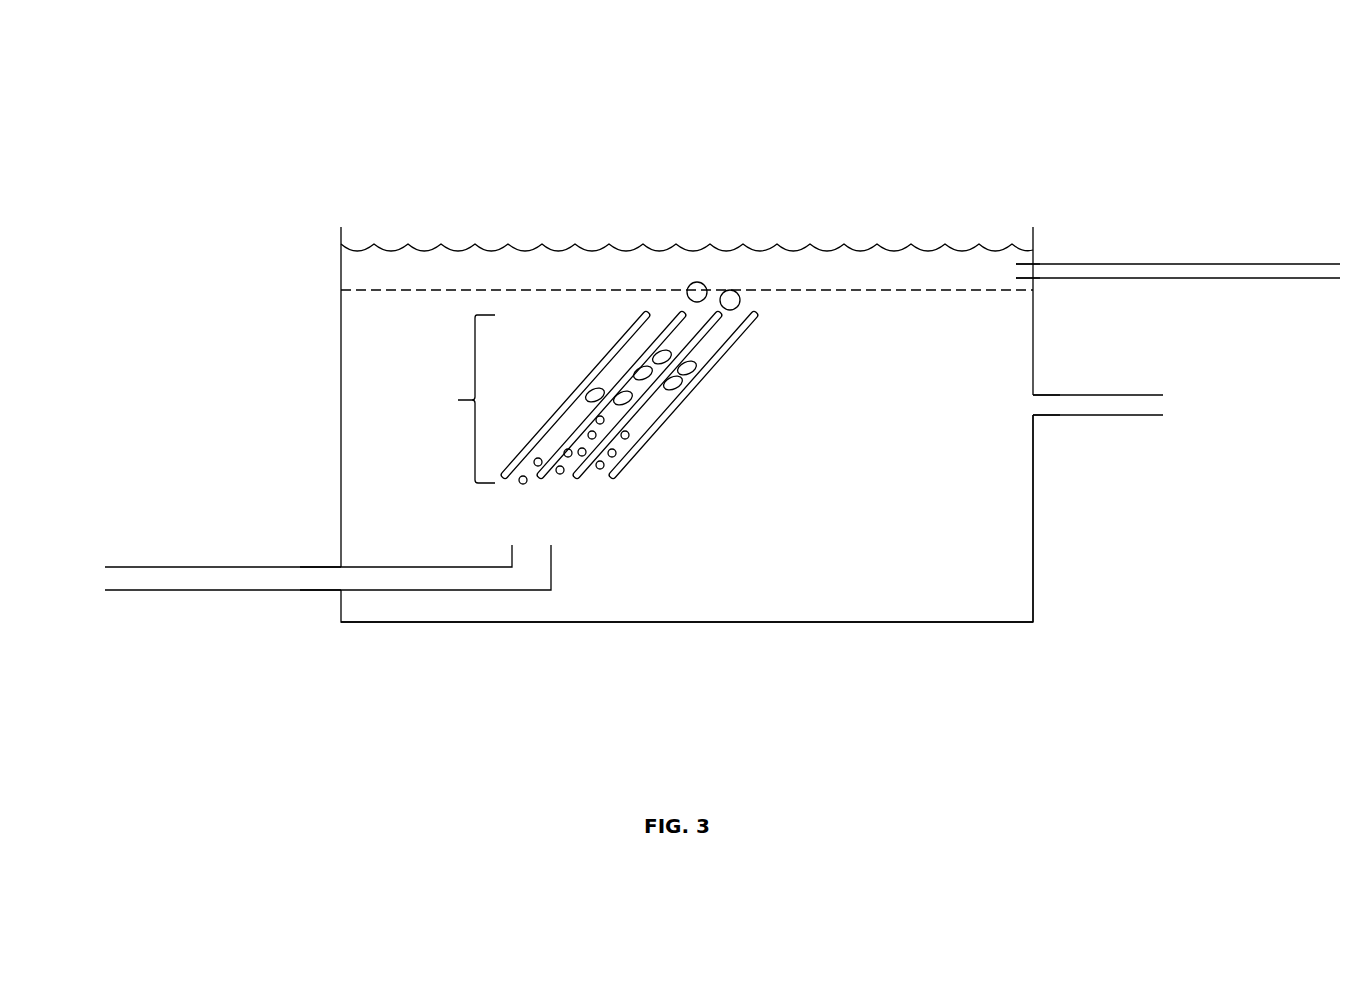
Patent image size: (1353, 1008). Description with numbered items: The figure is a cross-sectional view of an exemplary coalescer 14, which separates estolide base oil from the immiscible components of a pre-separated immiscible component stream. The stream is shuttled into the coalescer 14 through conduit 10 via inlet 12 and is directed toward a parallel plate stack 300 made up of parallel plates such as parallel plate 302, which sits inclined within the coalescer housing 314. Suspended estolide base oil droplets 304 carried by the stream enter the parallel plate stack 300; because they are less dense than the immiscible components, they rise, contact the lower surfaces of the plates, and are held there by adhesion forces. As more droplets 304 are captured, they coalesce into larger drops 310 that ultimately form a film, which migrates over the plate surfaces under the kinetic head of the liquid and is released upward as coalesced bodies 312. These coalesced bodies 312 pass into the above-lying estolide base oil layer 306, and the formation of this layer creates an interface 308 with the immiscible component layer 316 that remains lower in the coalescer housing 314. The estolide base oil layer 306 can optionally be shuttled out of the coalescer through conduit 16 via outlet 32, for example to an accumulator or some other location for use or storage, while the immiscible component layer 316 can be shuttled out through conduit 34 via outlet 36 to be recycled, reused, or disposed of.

The coalescer 14 is at (203, 176).
The estolide base oil layer 306 is at (488, 263).
The interface 308 is at (870, 290).
The parallel plate 302 is at (633, 462).
The parallel plate stack 300 is at (445, 399).
The larger drops 310 is at (630, 402).
The estolide base oil droplets 304 is at (565, 478).
The coalesced bodies 312 is at (745, 301).
The conduit 16 is at (1210, 280).
The outlet 32 is at (1052, 267).
The conduit 34 is at (1137, 417).
The outlet 36 is at (1050, 410).
The immiscible component layer 316 is at (990, 553).
The coalescer housing 314 is at (893, 622).
The conduit 10 is at (143, 592).
The inlet 12 is at (318, 582).